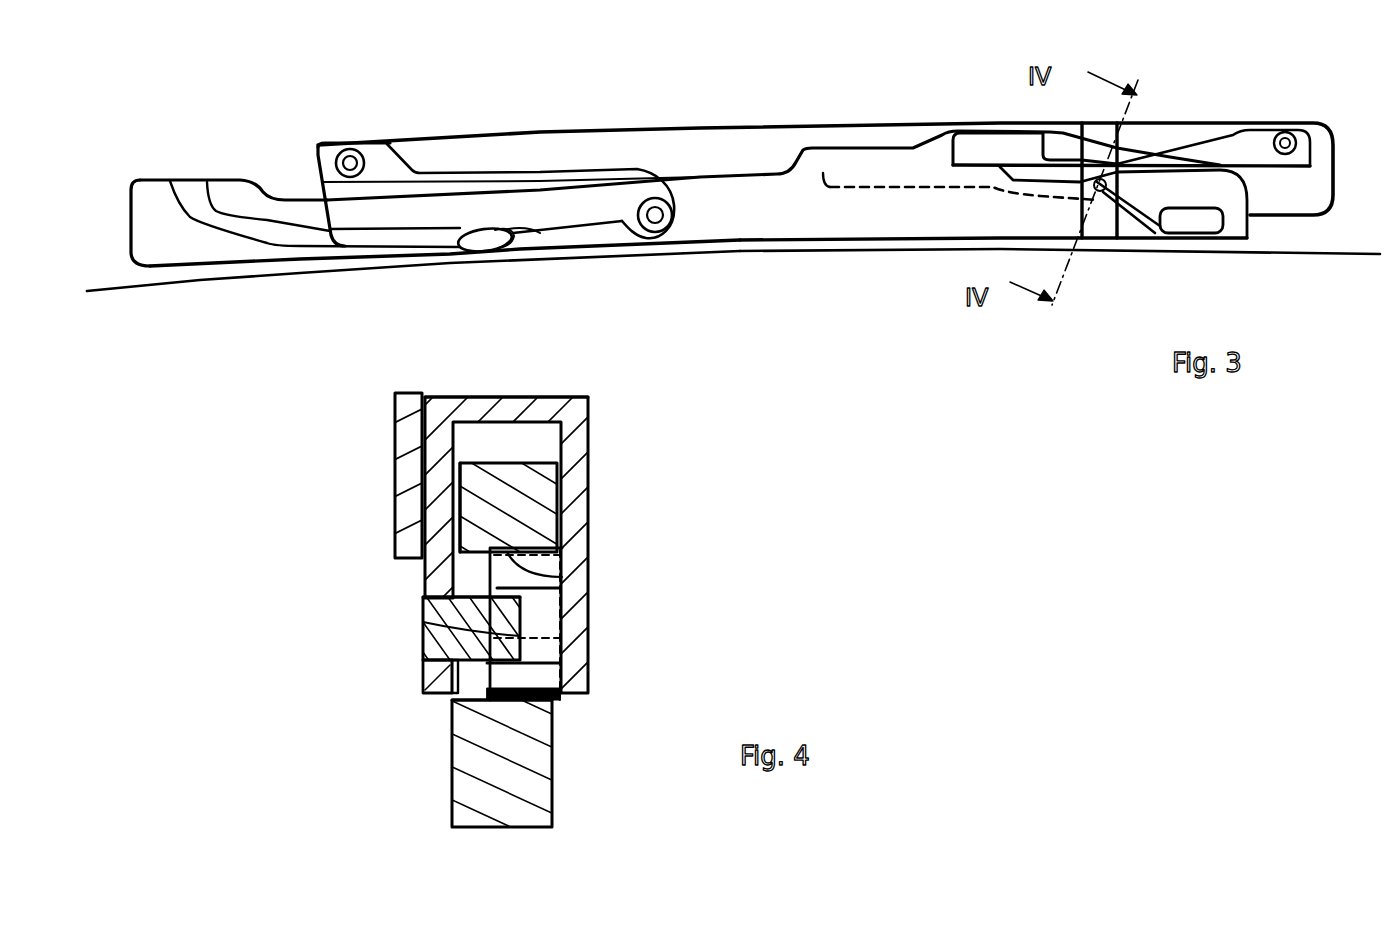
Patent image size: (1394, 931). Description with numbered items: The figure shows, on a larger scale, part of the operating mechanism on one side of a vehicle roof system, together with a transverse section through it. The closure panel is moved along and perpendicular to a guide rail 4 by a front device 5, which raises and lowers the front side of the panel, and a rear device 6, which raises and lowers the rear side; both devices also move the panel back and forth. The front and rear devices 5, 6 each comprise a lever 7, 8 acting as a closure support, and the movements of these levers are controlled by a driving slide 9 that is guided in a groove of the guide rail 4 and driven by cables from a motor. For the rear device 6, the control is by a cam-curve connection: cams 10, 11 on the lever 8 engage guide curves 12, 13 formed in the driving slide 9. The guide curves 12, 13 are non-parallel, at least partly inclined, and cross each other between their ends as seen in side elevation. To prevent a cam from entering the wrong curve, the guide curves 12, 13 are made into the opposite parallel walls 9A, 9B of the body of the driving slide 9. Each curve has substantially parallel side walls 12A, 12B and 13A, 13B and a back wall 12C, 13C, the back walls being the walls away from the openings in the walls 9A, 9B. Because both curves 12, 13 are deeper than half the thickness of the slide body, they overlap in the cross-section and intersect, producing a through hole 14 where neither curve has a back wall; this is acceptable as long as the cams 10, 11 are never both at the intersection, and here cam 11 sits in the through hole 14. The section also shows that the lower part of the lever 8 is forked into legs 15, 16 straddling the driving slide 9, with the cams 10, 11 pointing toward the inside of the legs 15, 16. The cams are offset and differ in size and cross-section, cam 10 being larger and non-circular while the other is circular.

In FIG. 3, the guide rail 4 is at (217, 283).
In FIG. 3, the front device 5 is at (343, 287).
In FIG. 3, the rear device 6 is at (1272, 270).
In FIG. 3, the lever 7 is at (538, 198).
In FIG. 3, the lever 8 is at (1318, 168).
In FIG. 4, the lever 8 is at (547, 405).
In FIG. 3, the driving slide 9 is at (803, 215).
In FIG. 4, the driving slide 9 is at (518, 780).
In FIG. 4, the wall of the body of driving slide 9A is at (552, 762).
In FIG. 4, the wall of the body of driving slide 9B is at (463, 540).
In FIG. 3, the cam 10 is at (1200, 223).
In FIG. 4, the cam 10 is at (548, 602).
In FIG. 3, the cam 11 is at (1120, 240).
In FIG. 4, the cam 11 is at (435, 625).
In FIG. 3, the guide curve 12 is at (965, 150).
In FIG. 4, the guide curve 12 is at (563, 574).
In FIG. 4, the side wall 12A is at (545, 548).
In FIG. 4, the side wall 12B is at (557, 680).
In FIG. 4, the back wall 12C is at (548, 702).
In FIG. 3, the guide curve 13 is at (852, 162).
In FIG. 4, the guide curve 13 is at (428, 688).
In FIG. 4, the side wall 13A is at (445, 603).
In FIG. 4, the side wall 13B is at (435, 660).
In FIG. 4, the back wall 13C is at (455, 651).
In FIG. 3, the through hole 14 is at (1120, 162).
In FIG. 4, the through hole 14 is at (455, 700).
In FIG. 4, the leg 15 is at (580, 438).
In FIG. 4, the leg 16 is at (447, 445).